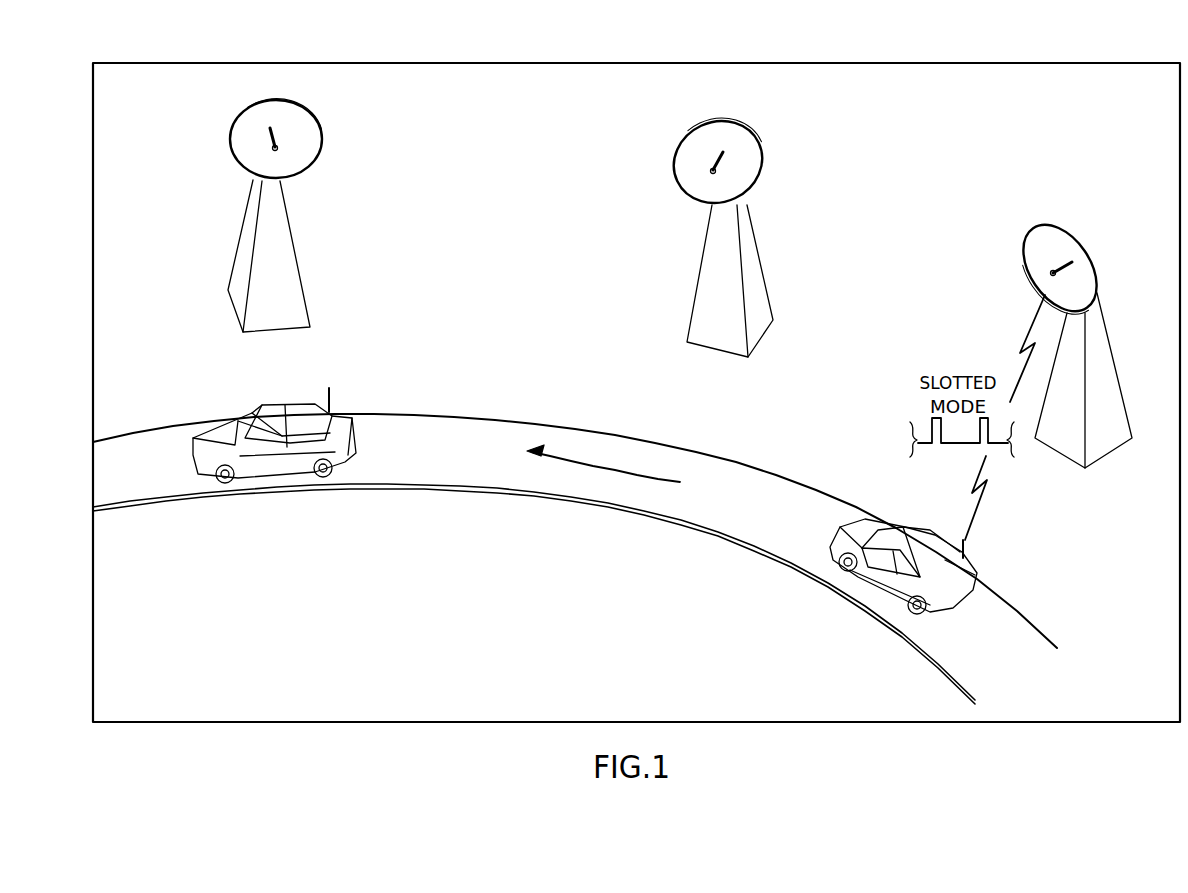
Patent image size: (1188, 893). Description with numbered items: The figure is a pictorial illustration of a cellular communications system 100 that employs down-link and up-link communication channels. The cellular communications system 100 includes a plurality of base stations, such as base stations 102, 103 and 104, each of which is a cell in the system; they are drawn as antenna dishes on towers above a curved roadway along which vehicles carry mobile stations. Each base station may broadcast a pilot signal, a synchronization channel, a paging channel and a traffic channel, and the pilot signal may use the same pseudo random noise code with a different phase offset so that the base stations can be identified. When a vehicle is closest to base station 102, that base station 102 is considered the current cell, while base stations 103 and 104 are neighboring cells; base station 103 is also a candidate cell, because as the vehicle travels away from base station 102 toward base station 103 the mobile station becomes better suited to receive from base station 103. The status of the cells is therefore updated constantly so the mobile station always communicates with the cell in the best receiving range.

The cellular communications system 100 is at (1118, 63).
The base station 102 is at (1068, 240).
The base station 103 is at (762, 165).
The base station 104 is at (313, 145).